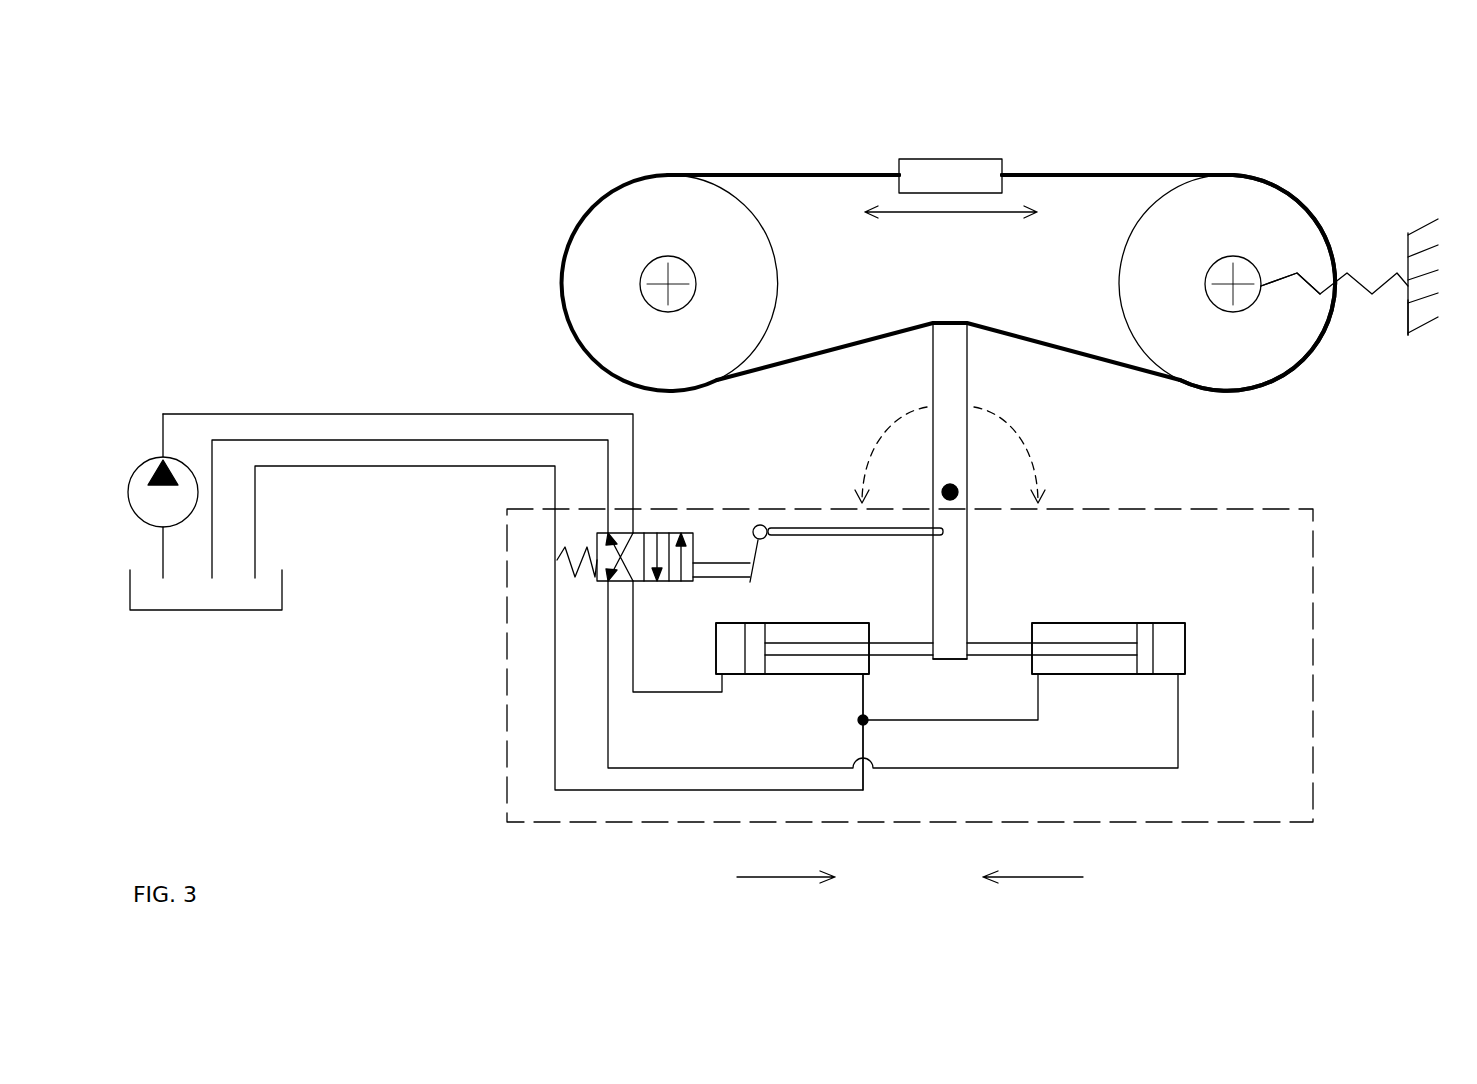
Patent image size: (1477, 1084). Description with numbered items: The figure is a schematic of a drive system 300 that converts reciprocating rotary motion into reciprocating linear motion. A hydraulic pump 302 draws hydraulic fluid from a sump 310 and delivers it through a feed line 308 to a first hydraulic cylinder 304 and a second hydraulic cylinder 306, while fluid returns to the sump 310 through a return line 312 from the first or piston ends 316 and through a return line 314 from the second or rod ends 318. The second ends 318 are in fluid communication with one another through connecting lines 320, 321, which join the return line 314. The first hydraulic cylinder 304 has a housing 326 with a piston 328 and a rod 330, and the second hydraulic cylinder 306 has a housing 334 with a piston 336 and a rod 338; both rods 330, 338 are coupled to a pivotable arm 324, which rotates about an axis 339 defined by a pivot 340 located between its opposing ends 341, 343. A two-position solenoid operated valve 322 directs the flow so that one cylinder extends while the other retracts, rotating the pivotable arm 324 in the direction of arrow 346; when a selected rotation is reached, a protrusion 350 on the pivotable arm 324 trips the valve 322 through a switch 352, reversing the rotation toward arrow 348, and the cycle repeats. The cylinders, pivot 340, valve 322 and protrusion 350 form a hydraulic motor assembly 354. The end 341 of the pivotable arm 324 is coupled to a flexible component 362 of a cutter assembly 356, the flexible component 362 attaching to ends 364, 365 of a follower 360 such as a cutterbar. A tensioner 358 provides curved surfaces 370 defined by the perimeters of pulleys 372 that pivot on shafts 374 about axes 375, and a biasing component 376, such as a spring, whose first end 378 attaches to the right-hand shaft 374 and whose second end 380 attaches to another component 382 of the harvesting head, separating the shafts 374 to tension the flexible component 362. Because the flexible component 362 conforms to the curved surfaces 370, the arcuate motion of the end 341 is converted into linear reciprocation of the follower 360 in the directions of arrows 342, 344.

The drive system 300 is at (257, 122).
The hydraulic pump 302 is at (140, 455).
The first hydraulic cylinder 304 is at (1111, 599).
The second hydraulic cylinder 306 is at (785, 692).
The feed line 308 is at (327, 414).
The sump 310 is at (230, 611).
The return line 312 is at (327, 440).
The return line 314 is at (408, 466).
The first end 316 is at (716, 650).
The second end 318 is at (872, 627).
The connecting line 320 is at (1040, 710).
The connecting line 321 is at (863, 693).
The two-position solenoid operated valve 322 is at (687, 582).
The pivotable arm 324 is at (933, 388).
The housing 326 is at (1100, 620).
The piston 328 is at (1150, 628).
The rod 330 is at (1058, 650).
The housing 334 is at (773, 674).
The piston 336 is at (753, 665).
The rod 338 is at (808, 650).
The axis 339 is at (1011, 429).
The pivot 340 is at (950, 484).
The end 341 is at (928, 333).
The arrow 342 is at (762, 880).
The end 343 is at (953, 660).
The arrow 344 is at (1045, 880).
The arrow 346 is at (1018, 433).
The arrow 348 is at (883, 433).
The protrusion 350 is at (822, 537).
The switch 352 is at (757, 557).
The hydraulic motor assembly 354 is at (1217, 825).
The cutter assembly 356 is at (1160, 175).
The tensioner 358 is at (1292, 183).
The follower 360 is at (952, 159).
The flexible component 362 is at (808, 175).
The end 364 is at (1003, 175).
The end 365 is at (897, 175).
The curved surface 370 is at (882, 305).
The pulley 372 is at (593, 208).
The shaft 374 is at (680, 258).
The axis 375 is at (650, 298).
The biasing component 376 is at (1360, 277).
The first end 378 is at (1264, 285).
The second end 380 is at (1377, 288).
The component 382 is at (1397, 332).